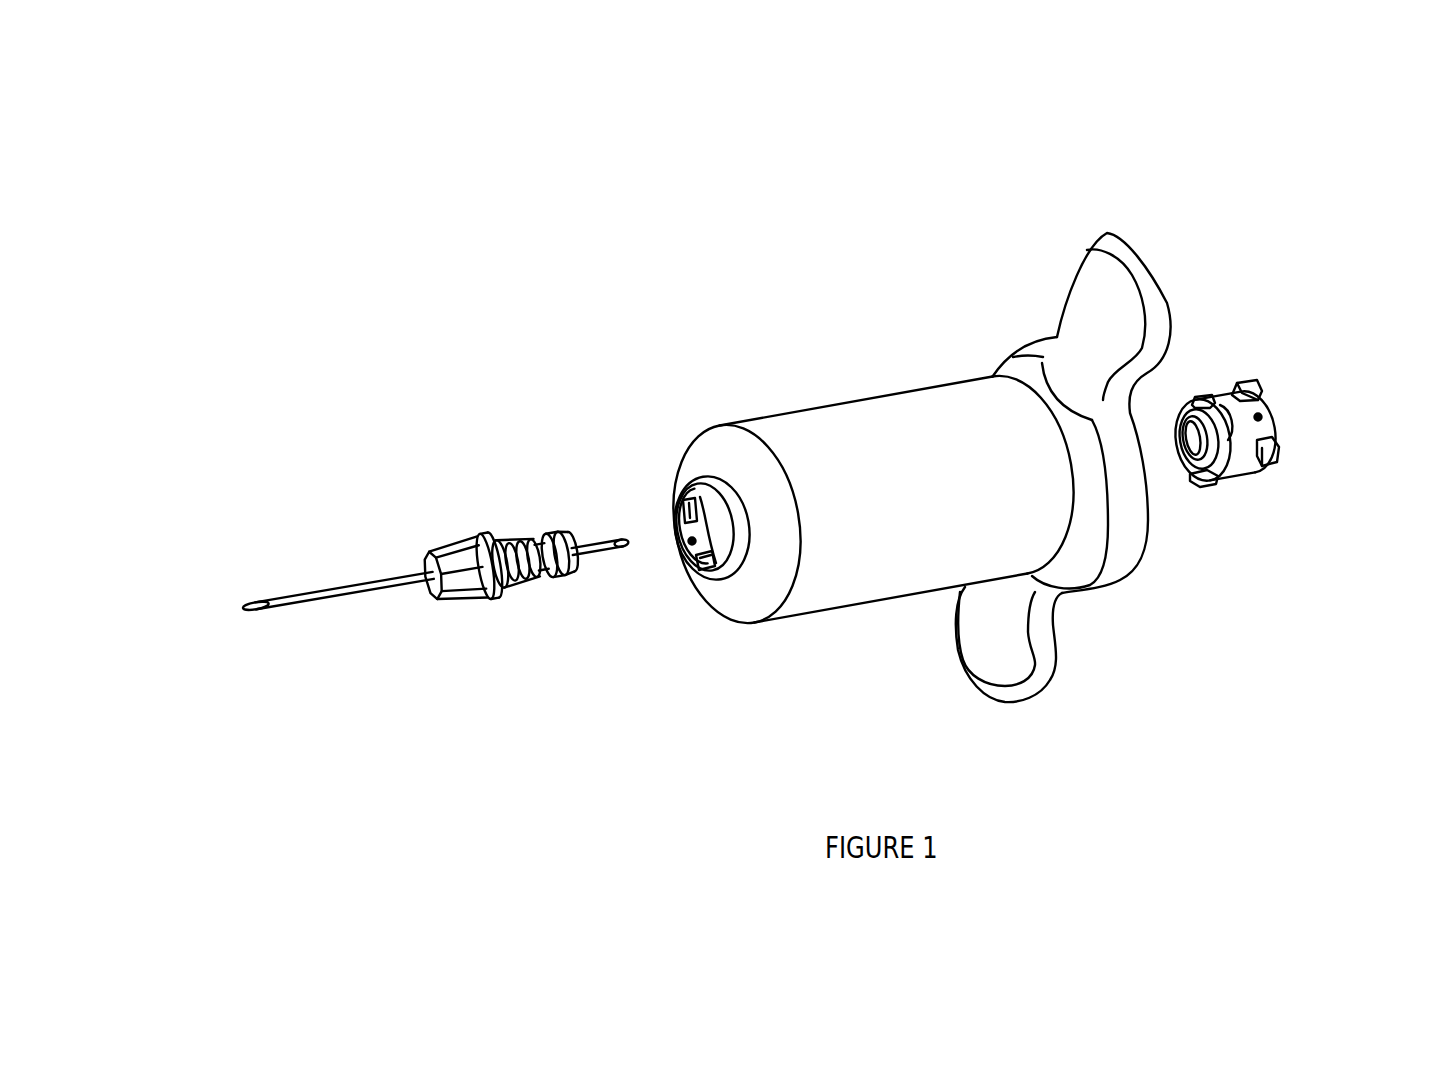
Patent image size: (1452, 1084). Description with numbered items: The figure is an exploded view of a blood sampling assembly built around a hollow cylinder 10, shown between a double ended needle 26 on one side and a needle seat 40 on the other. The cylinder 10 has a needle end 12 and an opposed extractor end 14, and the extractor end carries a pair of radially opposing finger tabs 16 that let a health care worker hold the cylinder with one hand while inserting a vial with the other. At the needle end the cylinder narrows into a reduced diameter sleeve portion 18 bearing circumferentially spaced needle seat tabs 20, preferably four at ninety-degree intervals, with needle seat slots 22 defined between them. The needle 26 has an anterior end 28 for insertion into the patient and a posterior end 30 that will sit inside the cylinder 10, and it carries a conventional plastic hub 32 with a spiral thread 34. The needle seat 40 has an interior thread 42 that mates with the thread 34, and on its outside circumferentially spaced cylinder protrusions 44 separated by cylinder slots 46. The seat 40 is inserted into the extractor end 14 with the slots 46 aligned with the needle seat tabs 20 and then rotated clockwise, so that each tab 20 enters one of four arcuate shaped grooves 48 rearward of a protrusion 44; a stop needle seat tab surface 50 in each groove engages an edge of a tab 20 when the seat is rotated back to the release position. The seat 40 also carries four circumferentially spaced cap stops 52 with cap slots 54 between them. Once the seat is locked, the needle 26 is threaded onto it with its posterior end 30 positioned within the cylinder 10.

The cylinder 10 is at (890, 664).
The needle end 12 is at (866, 426).
The extractor end 14 is at (1071, 390).
The finger tabs 16 is at (1059, 669).
The reduced diameter sleeve portion 18 is at (676, 415).
The needle seat tabs 20 is at (613, 415).
The needle seat slots 22 is at (632, 606).
The double ended needle 26 is at (331, 544).
The anterior end 28 is at (198, 576).
The posterior end 30 is at (540, 458).
The plastic hub 32 is at (430, 603).
The spiral thread 34 is at (472, 499).
The needle seat 40 is at (1313, 435).
The interior thread 42 is at (1216, 511).
The cylinder protrusions 44 is at (1238, 308).
The cylinder slots 46 is at (1280, 346).
The arcuate shaped grooves 48 is at (1314, 484).
The stop needle seat tab surface 50 is at (1251, 525).
The cap stops 52 is at (1306, 349).
The cap slots 54 is at (1335, 382).